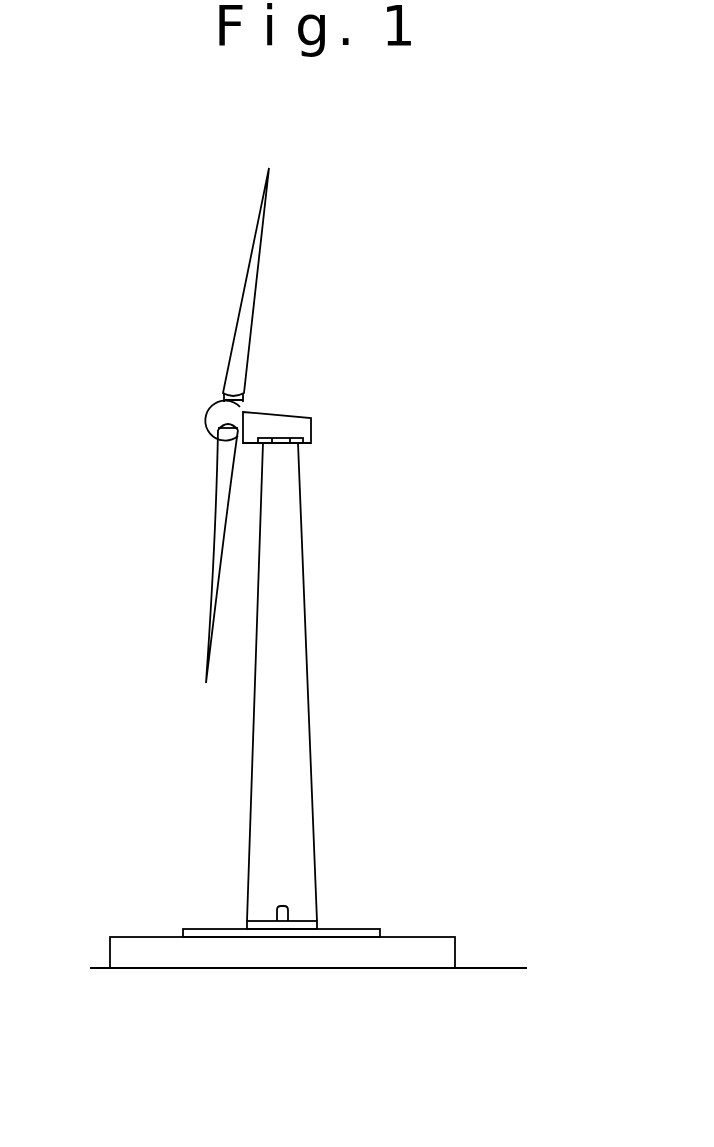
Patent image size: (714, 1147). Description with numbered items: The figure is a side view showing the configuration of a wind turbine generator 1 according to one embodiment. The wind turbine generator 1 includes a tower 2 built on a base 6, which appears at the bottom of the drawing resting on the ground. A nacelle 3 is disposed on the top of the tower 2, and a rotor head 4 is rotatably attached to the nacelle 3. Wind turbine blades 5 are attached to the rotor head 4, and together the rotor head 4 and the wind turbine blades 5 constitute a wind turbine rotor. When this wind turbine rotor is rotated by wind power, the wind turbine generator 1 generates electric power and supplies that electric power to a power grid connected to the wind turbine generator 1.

The wind turbine generator 1 is at (473, 357).
The tower 2 is at (305, 623).
The nacelle 3 is at (289, 412).
The rotor head 4 is at (202, 418).
The wind turbine blades 5 is at (247, 270).
The base 6 is at (415, 942).